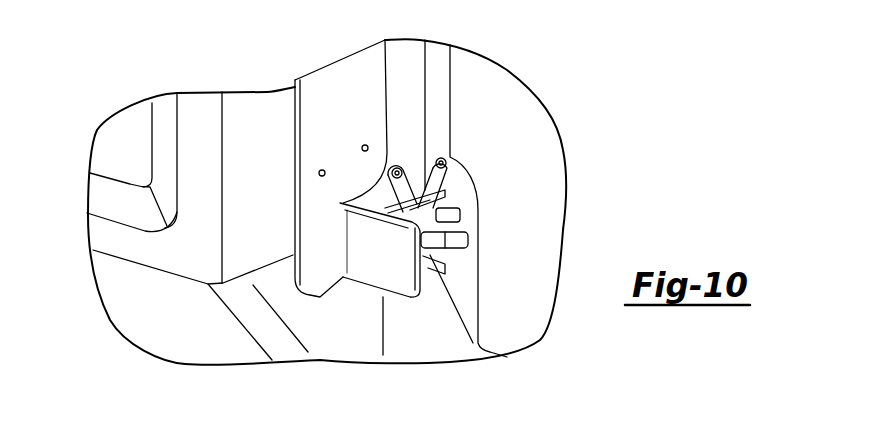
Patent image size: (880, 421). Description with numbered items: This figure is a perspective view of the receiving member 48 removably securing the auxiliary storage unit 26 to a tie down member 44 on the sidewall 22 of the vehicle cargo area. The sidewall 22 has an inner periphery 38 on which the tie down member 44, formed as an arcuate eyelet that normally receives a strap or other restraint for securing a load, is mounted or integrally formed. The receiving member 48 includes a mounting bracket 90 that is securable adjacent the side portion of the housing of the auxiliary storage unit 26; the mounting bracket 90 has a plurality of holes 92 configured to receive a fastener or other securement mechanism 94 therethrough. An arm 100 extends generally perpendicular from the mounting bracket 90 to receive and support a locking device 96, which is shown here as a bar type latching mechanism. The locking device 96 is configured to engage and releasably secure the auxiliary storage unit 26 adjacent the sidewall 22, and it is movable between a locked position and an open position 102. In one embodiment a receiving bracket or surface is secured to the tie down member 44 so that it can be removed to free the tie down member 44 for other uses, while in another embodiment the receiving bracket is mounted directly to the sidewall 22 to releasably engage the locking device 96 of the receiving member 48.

The sidewall 22 is at (548, 162).
The auxiliary storage unit 26 is at (121, 136).
The inner periphery 38 is at (531, 117).
The tie down member 44 is at (465, 243).
The receiving member 48 is at (309, 137).
The mounting bracket 90 is at (320, 233).
The holes 92 is at (322, 170).
The fastener 94 is at (365, 145).
The locking device 96 is at (455, 156).
The arm 100 is at (385, 268).
The open position 102 is at (408, 160).